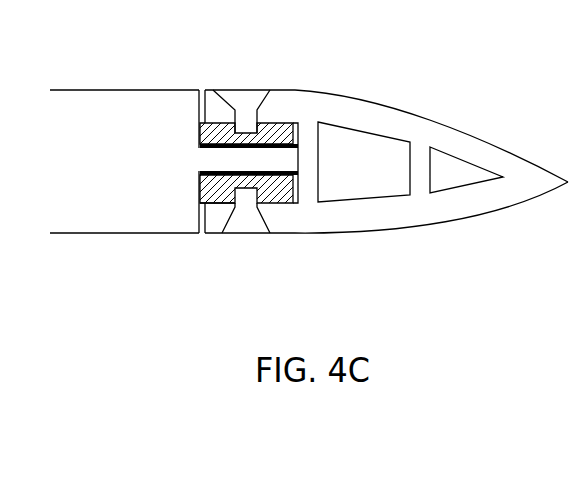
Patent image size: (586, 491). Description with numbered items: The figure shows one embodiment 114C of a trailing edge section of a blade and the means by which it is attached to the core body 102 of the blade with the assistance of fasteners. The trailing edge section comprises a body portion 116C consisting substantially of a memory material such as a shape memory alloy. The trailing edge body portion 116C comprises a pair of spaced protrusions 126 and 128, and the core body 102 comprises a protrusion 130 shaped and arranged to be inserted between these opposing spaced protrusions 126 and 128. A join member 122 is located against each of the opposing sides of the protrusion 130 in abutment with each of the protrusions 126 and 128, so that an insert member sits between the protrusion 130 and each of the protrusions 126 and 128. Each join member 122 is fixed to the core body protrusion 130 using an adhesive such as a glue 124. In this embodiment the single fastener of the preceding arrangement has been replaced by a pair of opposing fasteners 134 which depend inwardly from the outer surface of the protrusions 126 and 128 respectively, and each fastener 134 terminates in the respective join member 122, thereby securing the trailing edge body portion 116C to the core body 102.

The core body 102 is at (85, 108).
The embodiment of trailing edge section 114C is at (461, 80).
The trailing edge body portion 116C is at (473, 205).
The join member 122 is at (200, 233).
The glue 124 is at (294, 108).
The protrusion 126 is at (216, 97).
The protrusion 128 is at (221, 205).
The protrusion 130 is at (288, 163).
The fastener 134 is at (245, 100).